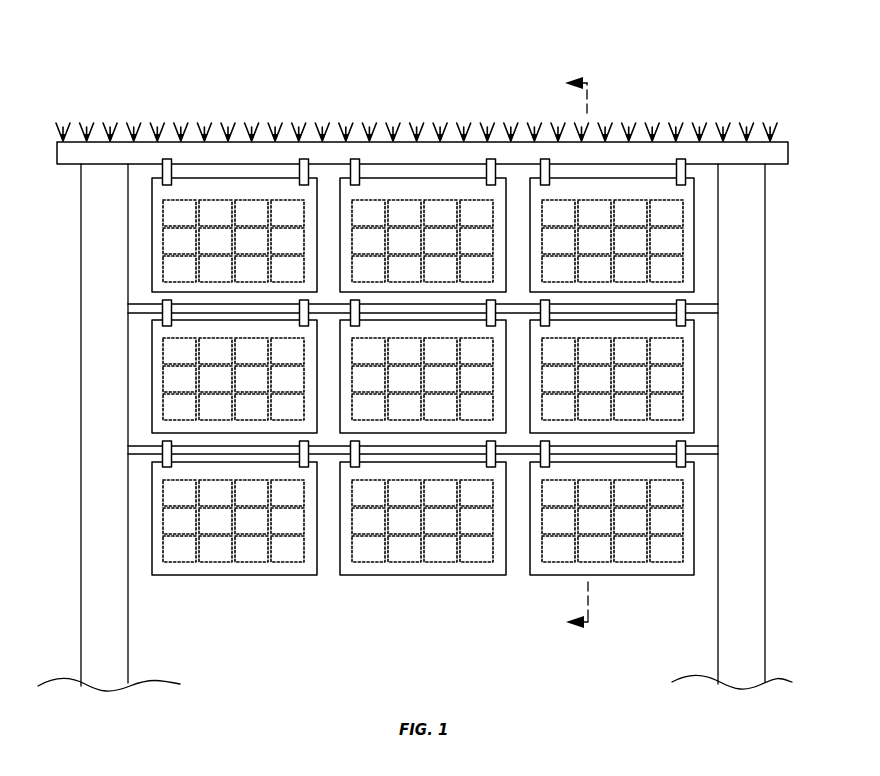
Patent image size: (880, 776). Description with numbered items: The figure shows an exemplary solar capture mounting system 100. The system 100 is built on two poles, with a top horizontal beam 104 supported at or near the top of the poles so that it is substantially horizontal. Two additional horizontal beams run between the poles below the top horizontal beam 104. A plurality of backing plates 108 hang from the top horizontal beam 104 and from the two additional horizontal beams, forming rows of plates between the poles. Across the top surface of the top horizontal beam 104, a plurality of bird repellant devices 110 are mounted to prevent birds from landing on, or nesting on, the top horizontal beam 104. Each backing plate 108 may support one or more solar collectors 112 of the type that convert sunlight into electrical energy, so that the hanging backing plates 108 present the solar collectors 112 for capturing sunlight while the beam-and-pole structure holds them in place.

The solar capture mounting system 100 is at (87, 46).
The top horizontal beam 104 is at (62, 165).
The backing plate 108 is at (553, 575).
The bird repellant device 110 is at (650, 113).
The solar collector 112 is at (683, 487).